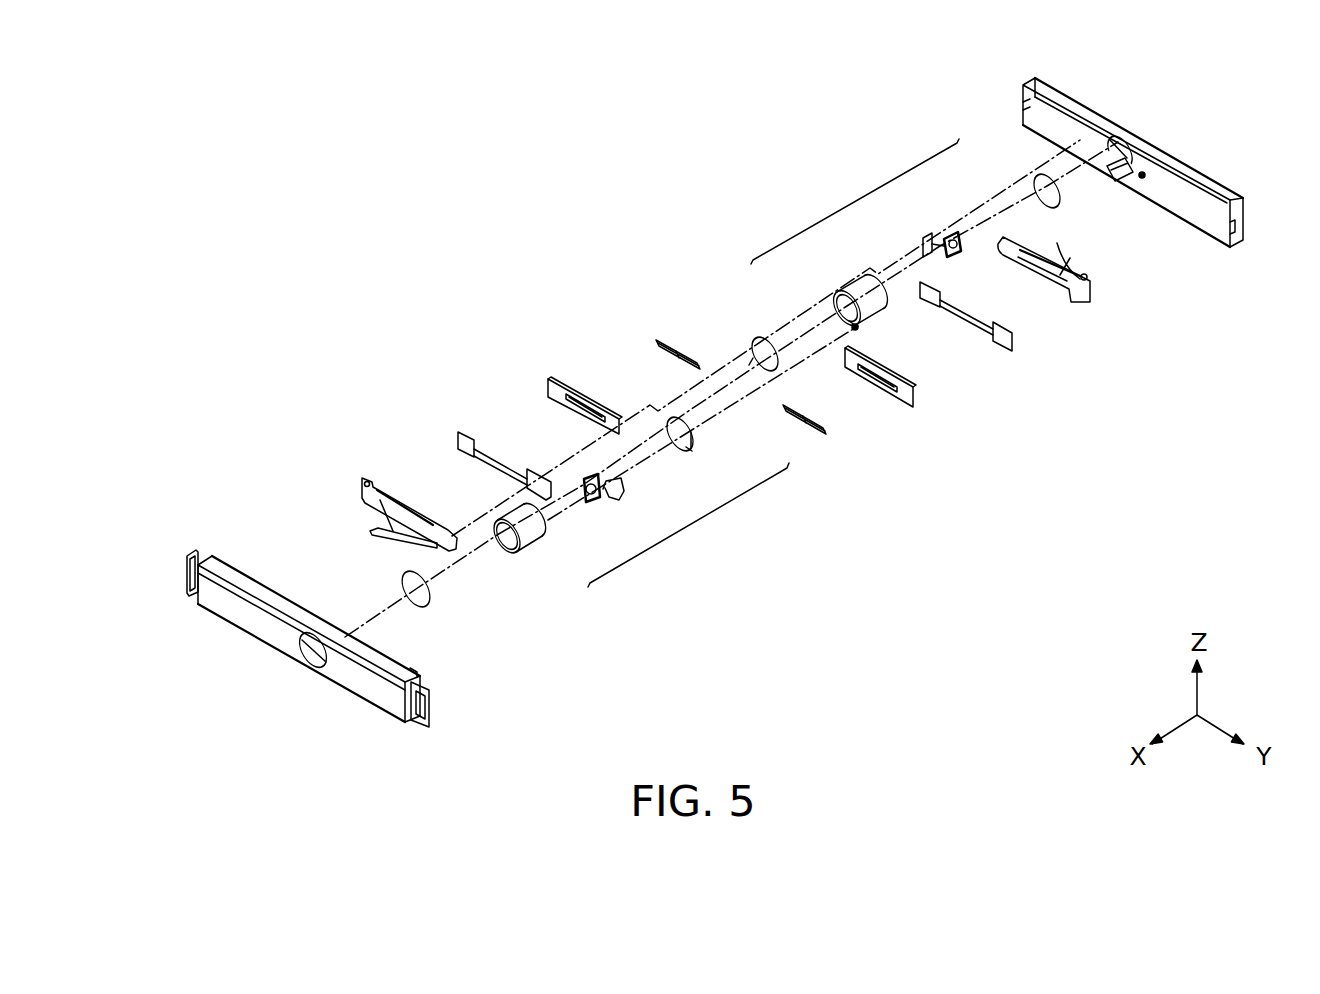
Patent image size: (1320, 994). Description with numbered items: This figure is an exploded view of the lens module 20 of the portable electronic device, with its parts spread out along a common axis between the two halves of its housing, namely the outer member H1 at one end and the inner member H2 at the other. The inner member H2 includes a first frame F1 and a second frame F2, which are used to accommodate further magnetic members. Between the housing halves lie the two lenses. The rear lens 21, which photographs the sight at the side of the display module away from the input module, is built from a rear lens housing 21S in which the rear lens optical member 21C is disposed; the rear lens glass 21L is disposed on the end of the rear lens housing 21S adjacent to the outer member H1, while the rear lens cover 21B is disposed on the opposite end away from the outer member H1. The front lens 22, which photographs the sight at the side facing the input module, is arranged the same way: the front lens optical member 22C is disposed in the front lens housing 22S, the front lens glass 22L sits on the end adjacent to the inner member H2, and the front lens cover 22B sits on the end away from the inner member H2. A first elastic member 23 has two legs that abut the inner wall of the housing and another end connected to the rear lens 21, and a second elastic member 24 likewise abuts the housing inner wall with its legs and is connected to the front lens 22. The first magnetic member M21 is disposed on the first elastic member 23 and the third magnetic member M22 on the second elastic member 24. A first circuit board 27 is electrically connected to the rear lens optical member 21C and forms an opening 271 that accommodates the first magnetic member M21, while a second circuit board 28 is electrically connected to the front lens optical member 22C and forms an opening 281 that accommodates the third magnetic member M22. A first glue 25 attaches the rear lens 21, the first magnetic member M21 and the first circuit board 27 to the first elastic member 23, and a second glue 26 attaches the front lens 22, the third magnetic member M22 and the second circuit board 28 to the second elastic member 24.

The lens module 20 is at (129, 114).
The outer member H1 is at (1188, 170).
The inner member H2 is at (210, 560).
The first frame F1 is at (187, 574).
The second frame F2 is at (430, 700).
The rear lens 21 is at (855, 203).
The rear lens glass 21L is at (1033, 187).
The rear lens optical member 21C is at (923, 241).
The rear lens housing 21S is at (833, 302).
The rear lens cover 21B is at (755, 351).
The front lens 22 is at (689, 525).
The front lens glass 22L is at (432, 596).
The front lens optical member 22C is at (617, 492).
The front lens housing 22S is at (535, 531).
The front lens cover 22B is at (700, 439).
The first elastic member 23 is at (363, 486).
The second elastic member 24 is at (1089, 292).
The first glue 25 is at (458, 436).
The second glue 26 is at (1012, 342).
The first circuit board 27 is at (550, 381).
The opening 271 is at (590, 402).
The second circuit board 28 is at (914, 400).
The opening 281 is at (876, 392).
The first magnetic member M21 is at (656, 343).
The third magnetic member M22 is at (826, 432).